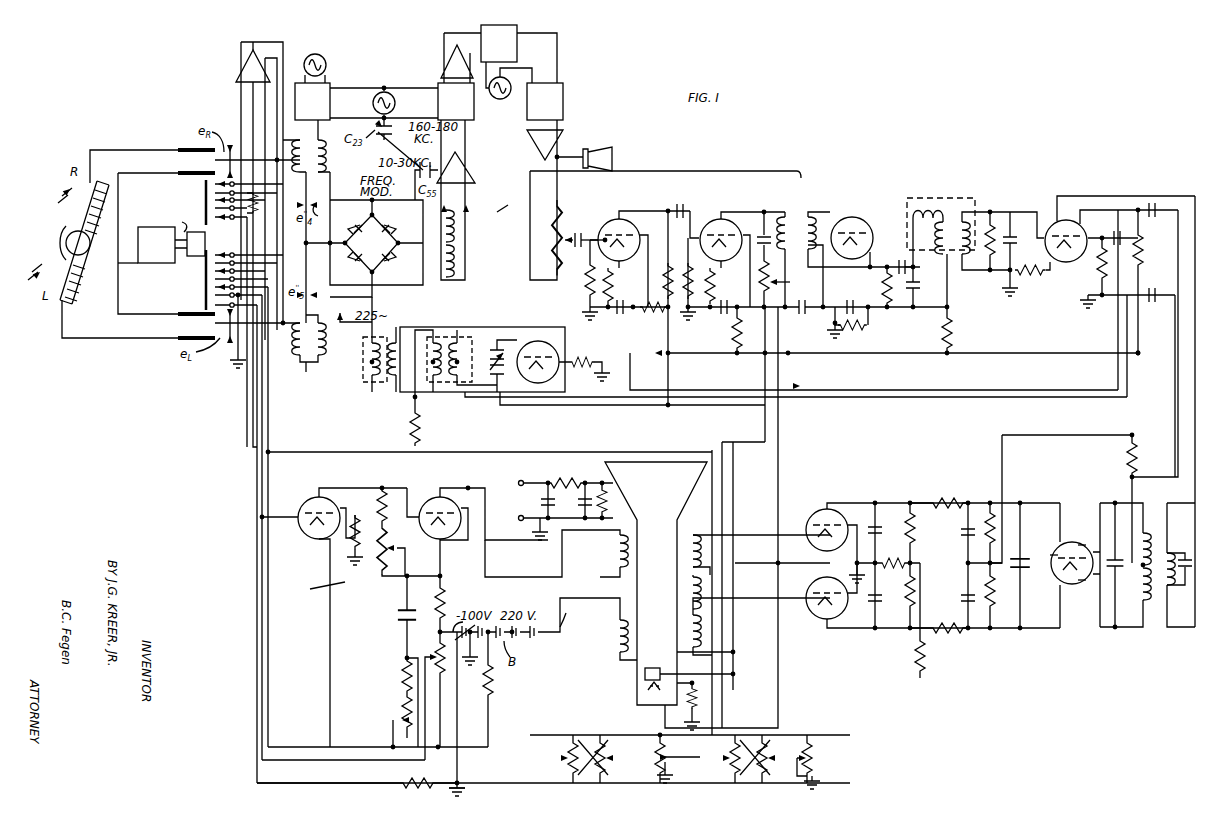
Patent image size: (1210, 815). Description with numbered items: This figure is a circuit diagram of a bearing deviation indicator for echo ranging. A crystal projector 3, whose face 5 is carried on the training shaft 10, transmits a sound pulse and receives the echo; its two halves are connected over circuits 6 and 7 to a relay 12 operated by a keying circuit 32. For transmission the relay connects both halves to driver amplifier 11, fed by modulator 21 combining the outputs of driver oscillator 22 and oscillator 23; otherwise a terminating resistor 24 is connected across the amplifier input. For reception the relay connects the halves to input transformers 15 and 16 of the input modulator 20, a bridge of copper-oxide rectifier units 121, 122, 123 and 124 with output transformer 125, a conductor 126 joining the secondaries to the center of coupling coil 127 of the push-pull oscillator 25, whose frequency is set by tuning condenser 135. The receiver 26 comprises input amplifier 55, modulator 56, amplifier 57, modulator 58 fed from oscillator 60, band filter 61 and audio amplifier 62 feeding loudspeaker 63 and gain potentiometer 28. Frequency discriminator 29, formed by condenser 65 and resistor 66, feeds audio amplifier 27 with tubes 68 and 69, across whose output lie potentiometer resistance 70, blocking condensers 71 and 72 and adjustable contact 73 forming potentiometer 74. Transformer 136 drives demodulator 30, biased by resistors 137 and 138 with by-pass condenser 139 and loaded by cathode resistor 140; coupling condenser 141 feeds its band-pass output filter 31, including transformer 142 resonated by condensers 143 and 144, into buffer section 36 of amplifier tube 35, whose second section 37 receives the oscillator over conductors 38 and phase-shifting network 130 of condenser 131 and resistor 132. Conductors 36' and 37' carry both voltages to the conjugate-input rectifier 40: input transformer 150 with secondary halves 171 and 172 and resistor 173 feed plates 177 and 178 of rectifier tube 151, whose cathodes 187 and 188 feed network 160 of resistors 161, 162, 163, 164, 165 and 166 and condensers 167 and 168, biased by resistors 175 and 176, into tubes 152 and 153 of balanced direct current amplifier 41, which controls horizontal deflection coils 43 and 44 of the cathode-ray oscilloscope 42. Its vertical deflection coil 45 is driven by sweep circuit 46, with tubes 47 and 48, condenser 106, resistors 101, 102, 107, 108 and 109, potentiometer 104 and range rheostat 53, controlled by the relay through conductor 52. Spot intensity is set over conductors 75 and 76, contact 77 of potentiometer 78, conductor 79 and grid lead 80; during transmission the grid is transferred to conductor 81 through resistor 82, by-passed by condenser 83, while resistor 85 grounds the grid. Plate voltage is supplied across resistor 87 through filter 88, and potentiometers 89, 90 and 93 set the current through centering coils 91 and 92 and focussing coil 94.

The projector 3 is at (72, 214).
The projector face 5 is at (62, 236).
The circuit 6 is at (137, 152).
The circuit 7 is at (130, 322).
The projector training shaft 10 is at (90, 243).
The driver amplifier 11 is at (241, 70).
The relay 12 is at (205, 244).
The input transformer 15 is at (326, 172).
The input transformer 16 is at (300, 350).
The input modulator 20 is at (364, 228).
The modulator 21 is at (331, 105).
The driver oscillator 22 is at (326, 60).
The oscillator 23 is at (396, 103).
The terminating resistor 24 is at (262, 210).
The push-pull oscillator 25 is at (552, 345).
The receiver circuit 26 is at (511, 204).
The audio frequency amplifier 27 is at (676, 168).
The gain adjusting potentiometer 28 is at (532, 238).
The frequency discriminator 29 is at (578, 224).
The amplitude demodulator 30 is at (836, 236).
The band-pass output filter 31 is at (898, 208).
The keying circuit 32 is at (143, 266).
The amplifier tube 35 is at (1055, 266).
The buffer amplifier section 36 is at (1105, 229).
The conductors 36' is at (1170, 411).
The second buffer amplifier section 37 is at (1102, 230).
The conductors 37' is at (1155, 343).
The conductors 38 is at (712, 400).
The conjugate-input rectifier 40 is at (1066, 538).
The balanced direct current amplifier 41 is at (858, 548).
The cathode-ray oscilloscope 42 is at (660, 462).
The horizontal deflection coil 43 is at (710, 534).
The horizontal deflection coil 44 is at (688, 586).
The vertical deflection coil 45 is at (620, 562).
The sweep circuit 46 is at (340, 596).
The amplifier tube 47 is at (302, 506).
The amplifier tube 48 is at (434, 500).
The conductor 52 is at (294, 766).
The range rheostat 53 is at (398, 720).
The input amplifier 55 is at (468, 176).
The modulator 56 is at (474, 118).
The amplifier 57 is at (444, 66).
The modulator 58 is at (517, 28).
The oscillator 60 is at (512, 85).
The modulator output band filter 61 is at (564, 104).
The audio amplifier 62 is at (560, 136).
The loudspeaker 63 is at (612, 158).
The condenser 65 is at (577, 235).
The resistor 66 is at (586, 285).
The tube 68 is at (637, 233).
The tube 69 is at (740, 230).
The potentiometer resistance 70 is at (742, 312).
The direct current blocking condenser 71 is at (759, 240).
The direct current blocking condenser 72 is at (808, 308).
The adjustable contact 73 is at (786, 284).
The potentiometer 74 is at (770, 284).
The conductor 75 is at (782, 372).
The conductor 76 is at (765, 368).
The adjustable contact 77 is at (672, 762).
The potentiometer 78 is at (655, 752).
The conductor 79 is at (232, 362).
The conductor 80 is at (247, 397).
The conductor 81 is at (257, 487).
The resistor 82 is at (400, 783).
The by-pass condenser 83 is at (466, 792).
The resistor 85 is at (700, 702).
The resistor 87 is at (608, 508).
The resistance-capacity filter 88 is at (566, 482).
The potentiometer 89 is at (590, 775).
The potentiometer 90 is at (751, 775).
The vertical centering coil 91 is at (616, 632).
The horizontal centering coil 92 is at (688, 628).
The potentiometer 93 is at (812, 753).
The focussing coil 94 is at (664, 660).
The resistor 101 is at (445, 600).
The resistor 102 is at (491, 690).
The potentiometer 104 is at (453, 690).
The condenser 106 is at (400, 619).
The resistor 107 is at (402, 676).
The interstage coupling resistor 108 is at (390, 548).
The interstage coupling resistor 109 is at (378, 497).
The copper-oxide rectifier unit 121 is at (353, 230).
The copper-oxide rectifier unit 122 is at (398, 224).
The copper-oxide rectifier unit 123 is at (381, 264).
The copper-oxide rectifier unit 124 is at (344, 264).
The output transformer 125 is at (437, 283).
The conductor 126 is at (330, 293).
The output coupling coil 127 is at (378, 390).
The phase-shifting network 130 is at (1136, 250).
The condenser 131 is at (1122, 209).
The resistor 132 is at (1103, 278).
The tuning condenser 135 is at (506, 386).
The transformer 136 is at (792, 214).
The resistor 137 is at (856, 328).
The resistor 138 is at (953, 332).
The condenser 139 is at (826, 309).
The cathode resistor 140 is at (884, 285).
The coupling condenser 141 is at (903, 263).
The transformer 142 is at (932, 203).
The condenser 143 is at (917, 285).
The condenser 144 is at (1012, 234).
The input transformer 150 is at (1158, 628).
The rectifier tube 151 is at (1051, 570).
The direct current amplifier tube 152 is at (812, 509).
The direct current amplifier tube 153 is at (814, 619).
The network 160 is at (910, 500).
The resistor 161 is at (990, 508).
The resistor 162 is at (995, 603).
The resistor 163 is at (944, 498).
The resistor 164 is at (940, 634).
The resistor 165 is at (917, 518).
The resistor 166 is at (917, 583).
The condenser 167 is at (962, 538).
The condenser 168 is at (962, 598).
The secondary winding half 171 is at (1172, 552).
The secondary winding half 172 is at (1142, 606).
The resistor 173 is at (1128, 462).
The resistor 175 is at (915, 658).
The resistor 176 is at (898, 560).
The plate 177 is at (1081, 542).
The plate 178 is at (1076, 586).
The cathode 187 is at (1052, 550).
The cathode 188 is at (1066, 604).